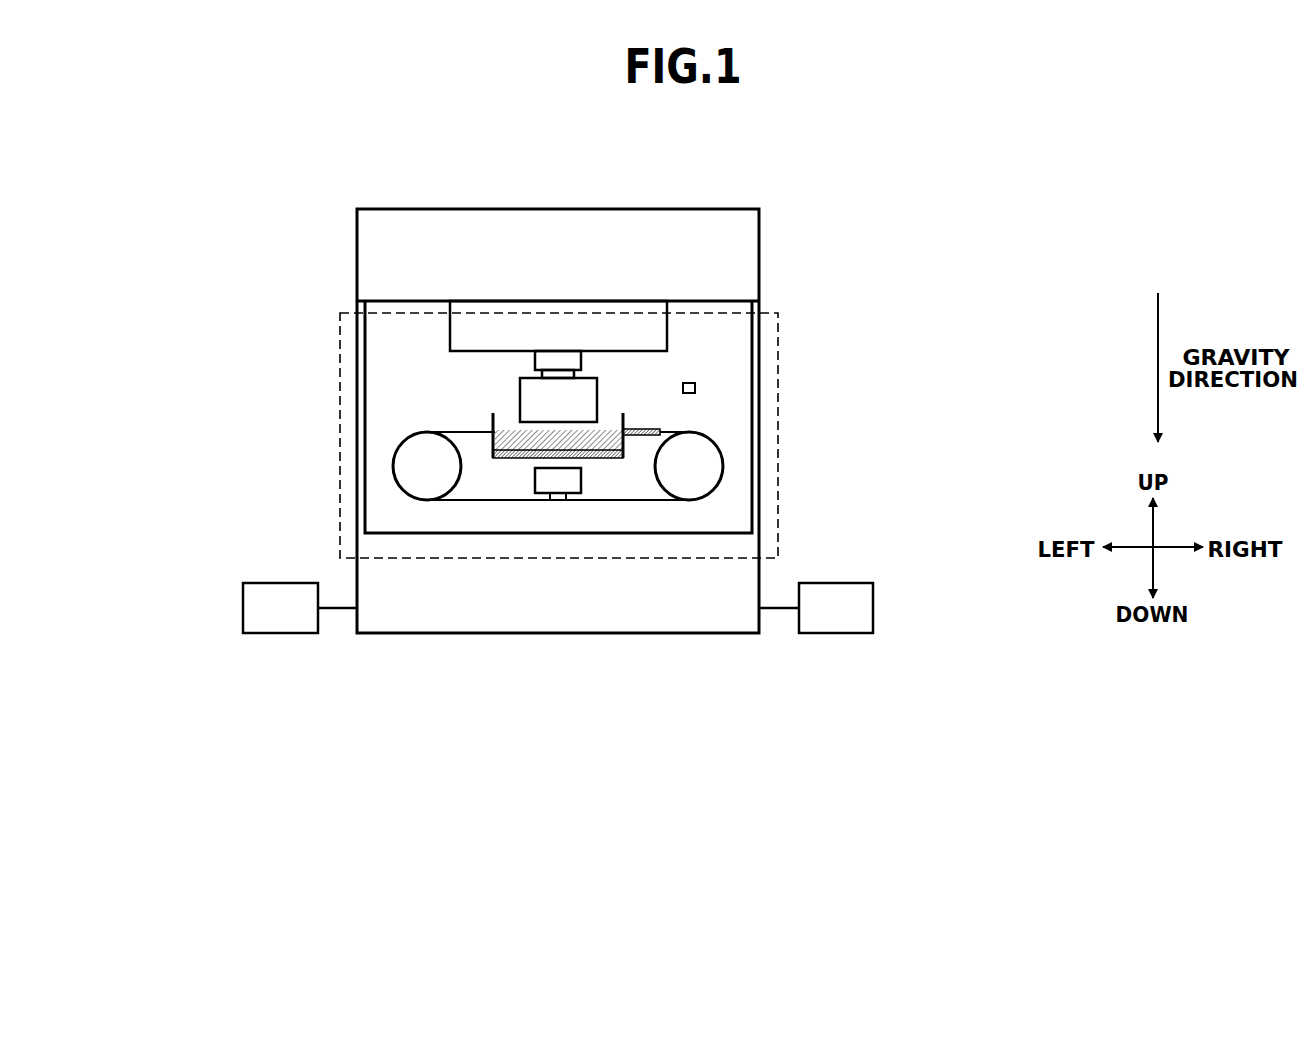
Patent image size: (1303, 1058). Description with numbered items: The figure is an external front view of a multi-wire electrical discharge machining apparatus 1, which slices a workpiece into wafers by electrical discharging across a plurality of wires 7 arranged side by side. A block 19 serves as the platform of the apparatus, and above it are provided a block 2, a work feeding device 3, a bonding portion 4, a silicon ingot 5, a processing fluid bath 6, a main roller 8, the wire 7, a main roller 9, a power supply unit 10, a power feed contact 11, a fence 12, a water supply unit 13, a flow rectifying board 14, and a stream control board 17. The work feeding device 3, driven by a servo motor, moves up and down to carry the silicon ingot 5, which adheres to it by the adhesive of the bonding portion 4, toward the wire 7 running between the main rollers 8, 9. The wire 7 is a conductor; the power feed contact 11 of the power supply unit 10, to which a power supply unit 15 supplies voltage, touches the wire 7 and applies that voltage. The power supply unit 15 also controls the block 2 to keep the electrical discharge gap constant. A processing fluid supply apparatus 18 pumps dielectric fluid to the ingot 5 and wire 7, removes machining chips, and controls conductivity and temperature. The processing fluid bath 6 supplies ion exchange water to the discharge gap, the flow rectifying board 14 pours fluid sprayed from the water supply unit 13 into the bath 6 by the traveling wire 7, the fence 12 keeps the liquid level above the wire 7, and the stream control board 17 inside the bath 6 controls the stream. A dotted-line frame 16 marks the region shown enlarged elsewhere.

The multi-wire electrical discharge machining apparatus 1 is at (566, 209).
The block 2 is at (450, 329).
The work feeding device 3 is at (553, 352).
The bonding portion 4 is at (542, 374).
The silicon ingot 5 is at (520, 400).
The processing fluid bath 6 is at (625, 440).
The wire 7 is at (668, 432).
The main roller 8 is at (393, 466).
The main roller 9 is at (723, 465).
The power supply unit 10 is at (535, 470).
The power feed contact 11 is at (566, 500).
The fence 12 is at (493, 424).
The water supply unit 13 is at (690, 383).
The flow rectifying board 14 is at (650, 429).
The power supply unit 15 is at (280, 634).
The frame 16 is at (778, 313).
The stream control board 17 is at (603, 458).
The processing fluid supply apparatus 18 is at (835, 634).
The block 19 is at (395, 627).